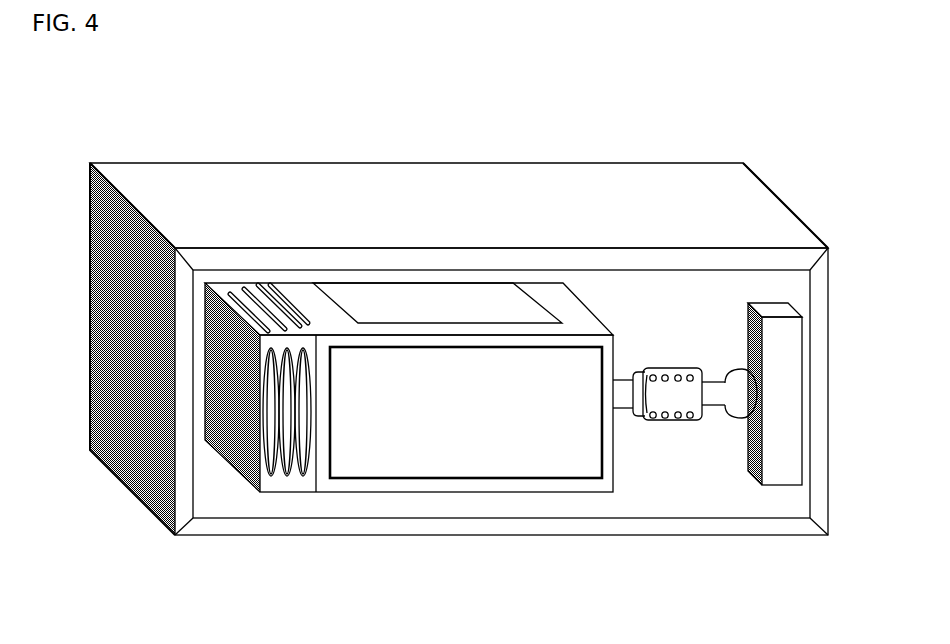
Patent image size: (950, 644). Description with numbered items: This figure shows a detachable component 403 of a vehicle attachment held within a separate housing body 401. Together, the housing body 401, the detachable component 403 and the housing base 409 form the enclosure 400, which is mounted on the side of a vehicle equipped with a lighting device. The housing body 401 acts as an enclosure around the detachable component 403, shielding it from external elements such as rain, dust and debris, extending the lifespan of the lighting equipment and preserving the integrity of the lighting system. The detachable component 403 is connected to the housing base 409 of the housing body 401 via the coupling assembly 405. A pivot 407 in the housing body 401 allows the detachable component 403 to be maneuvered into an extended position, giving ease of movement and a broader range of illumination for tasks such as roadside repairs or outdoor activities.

The enclosure 400 is at (266, 134).
The housing body 401 is at (543, 201).
The detachable component 403 is at (332, 501).
The coupling assembly 405 is at (647, 428).
The pivot 407 is at (740, 398).
The housing base 409 is at (775, 436).